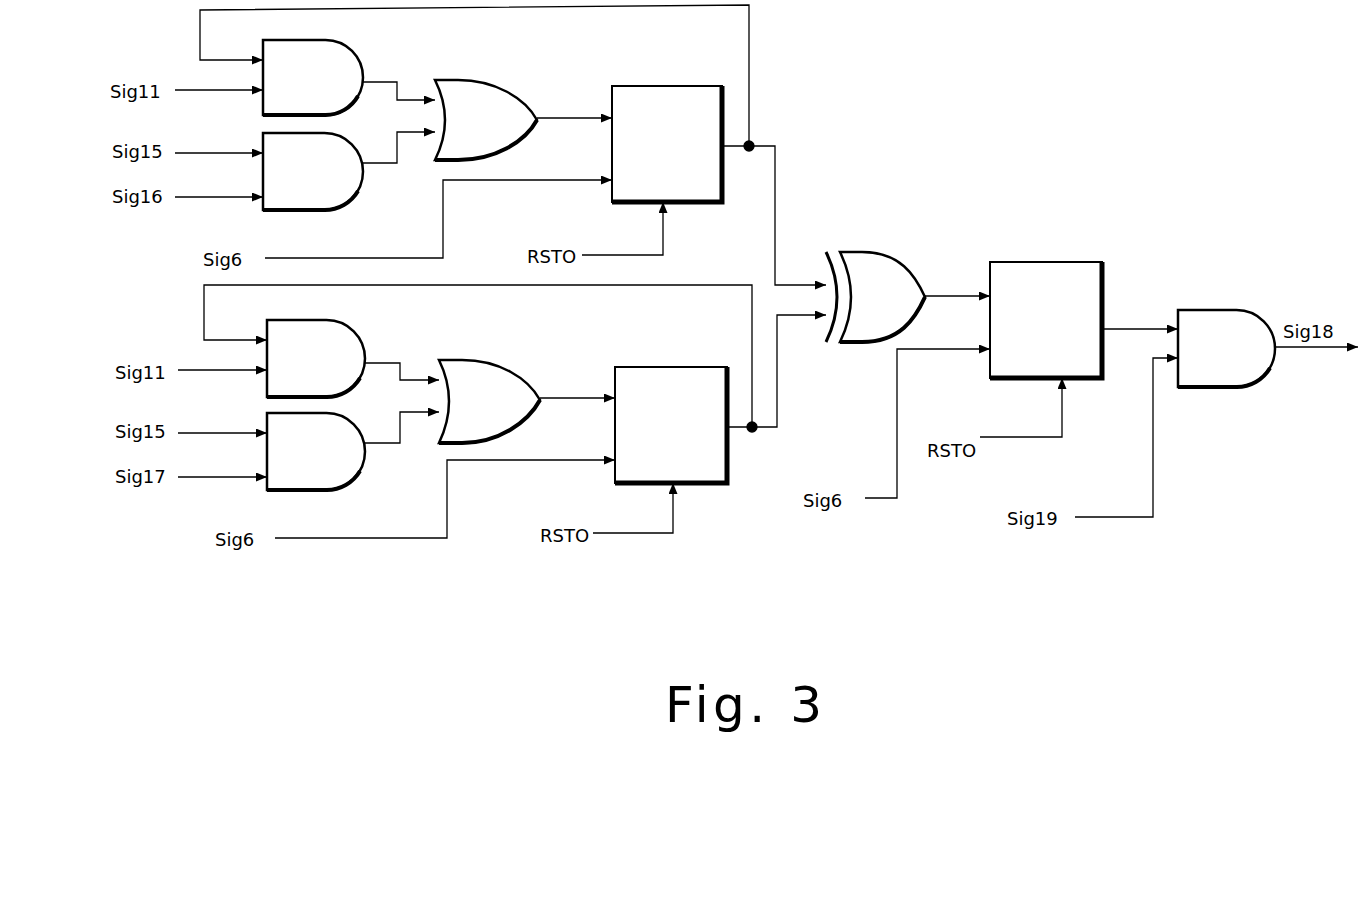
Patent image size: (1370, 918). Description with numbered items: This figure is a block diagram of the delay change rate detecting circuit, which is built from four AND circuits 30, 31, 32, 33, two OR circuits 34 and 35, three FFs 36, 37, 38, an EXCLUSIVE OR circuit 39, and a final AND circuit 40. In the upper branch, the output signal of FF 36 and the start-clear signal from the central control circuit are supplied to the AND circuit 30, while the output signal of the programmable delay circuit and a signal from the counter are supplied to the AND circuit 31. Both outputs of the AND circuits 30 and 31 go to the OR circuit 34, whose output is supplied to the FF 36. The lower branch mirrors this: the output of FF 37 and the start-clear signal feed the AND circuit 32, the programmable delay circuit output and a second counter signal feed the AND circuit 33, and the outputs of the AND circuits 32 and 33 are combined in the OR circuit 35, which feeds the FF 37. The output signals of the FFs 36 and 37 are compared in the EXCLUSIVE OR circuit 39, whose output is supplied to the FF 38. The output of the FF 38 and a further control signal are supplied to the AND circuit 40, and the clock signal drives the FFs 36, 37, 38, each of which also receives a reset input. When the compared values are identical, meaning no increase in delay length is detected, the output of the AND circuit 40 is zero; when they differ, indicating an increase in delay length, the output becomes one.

The AND circuit 30 is at (313, 77).
The AND circuit 31 is at (313, 171).
The AND circuit 32 is at (316, 358).
The AND circuit 33 is at (316, 451).
The OR circuit 34 is at (486, 120).
The OR circuit 35 is at (489, 401).
The FF 36 is at (667, 144).
The FF 37 is at (671, 425).
The FF 38 is at (1046, 320).
The EXCLUSIVE OR circuit 39 is at (875, 297).
The AND circuit 40 is at (1226, 348).